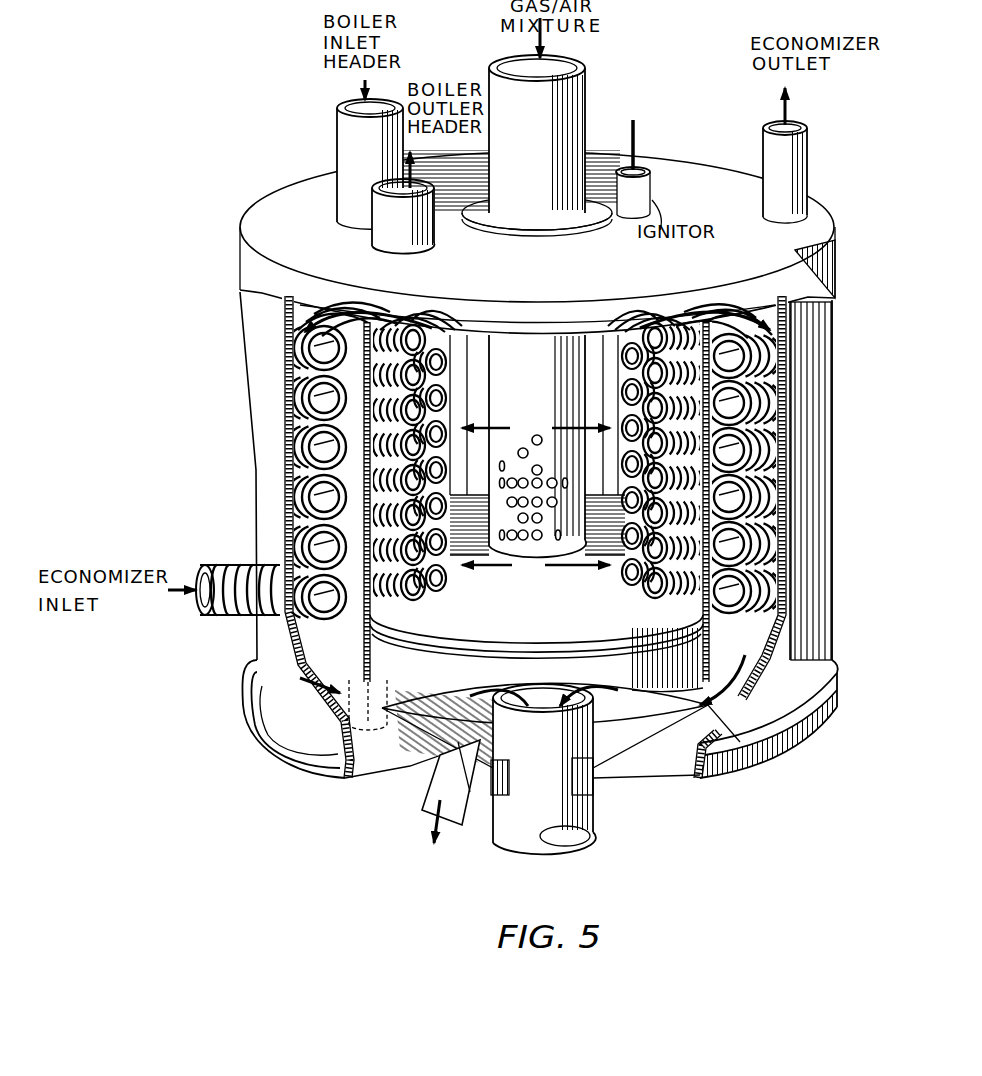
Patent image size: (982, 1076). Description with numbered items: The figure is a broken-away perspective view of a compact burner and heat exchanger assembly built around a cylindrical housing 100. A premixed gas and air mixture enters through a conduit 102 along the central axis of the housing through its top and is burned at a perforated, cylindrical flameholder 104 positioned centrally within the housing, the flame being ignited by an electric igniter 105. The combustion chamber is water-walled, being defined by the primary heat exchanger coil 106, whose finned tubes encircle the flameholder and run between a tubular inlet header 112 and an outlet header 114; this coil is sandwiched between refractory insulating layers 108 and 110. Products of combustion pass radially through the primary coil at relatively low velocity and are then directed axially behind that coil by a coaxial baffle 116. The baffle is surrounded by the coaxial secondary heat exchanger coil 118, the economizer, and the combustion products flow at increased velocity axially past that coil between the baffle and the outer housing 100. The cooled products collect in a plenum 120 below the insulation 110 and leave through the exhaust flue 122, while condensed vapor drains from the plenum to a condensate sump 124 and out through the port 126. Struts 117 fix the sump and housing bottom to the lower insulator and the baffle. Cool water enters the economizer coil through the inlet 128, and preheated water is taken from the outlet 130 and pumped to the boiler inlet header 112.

The cylindrical housing 100 is at (823, 208).
The conduit 102 is at (583, 125).
The perforated cylindrical flameholder 104 is at (575, 472).
The electric igniter 105 is at (642, 165).
The primary heat exchanger coil 106 is at (440, 584).
The refractory insulating layer 108 is at (603, 333).
The refractory insulating layer 110 is at (594, 638).
The inlet header 112 is at (340, 182).
The outlet header 114 is at (382, 228).
The coaxial baffle 116 is at (372, 657).
The struts 117 is at (765, 678).
The secondary heat exchanger coil 118 is at (290, 478).
The plenum 120 is at (390, 748).
The exhaust flue 122 is at (598, 822).
The condensate sump 124 is at (615, 748).
The port 126 is at (430, 800).
The inlet 128 is at (232, 614).
The outlet 130 is at (800, 150).